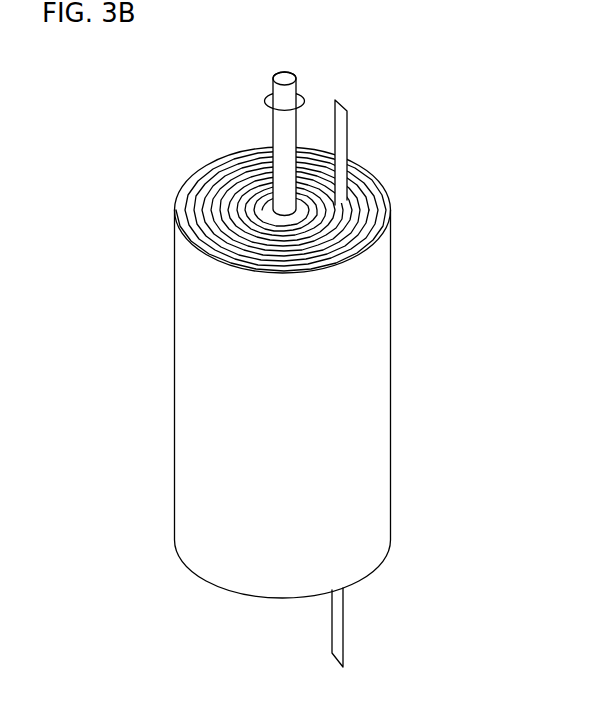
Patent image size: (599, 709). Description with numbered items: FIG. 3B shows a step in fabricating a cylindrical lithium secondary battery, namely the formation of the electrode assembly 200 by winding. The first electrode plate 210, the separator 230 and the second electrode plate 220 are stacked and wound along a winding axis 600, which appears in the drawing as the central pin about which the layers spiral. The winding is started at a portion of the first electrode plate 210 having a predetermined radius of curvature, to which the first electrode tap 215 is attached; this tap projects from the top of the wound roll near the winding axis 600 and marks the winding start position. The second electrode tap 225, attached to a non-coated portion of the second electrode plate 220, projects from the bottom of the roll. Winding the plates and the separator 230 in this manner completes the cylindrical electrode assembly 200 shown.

The electrode assembly 200 is at (428, 374).
The first electrode plate 210 is at (363, 191).
The first electrode tap 215 is at (343, 123).
The second electrode plate 220 is at (373, 205).
The second electrode tap 225 is at (336, 621).
The separator 230 is at (380, 230).
The winding axis 600 is at (287, 73).